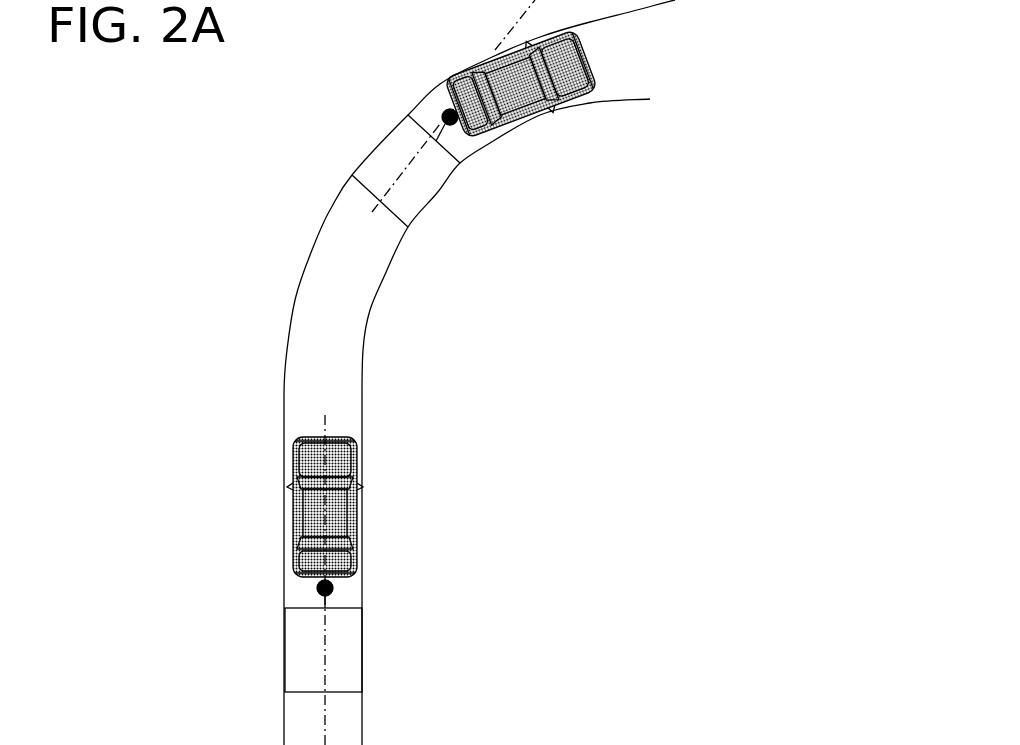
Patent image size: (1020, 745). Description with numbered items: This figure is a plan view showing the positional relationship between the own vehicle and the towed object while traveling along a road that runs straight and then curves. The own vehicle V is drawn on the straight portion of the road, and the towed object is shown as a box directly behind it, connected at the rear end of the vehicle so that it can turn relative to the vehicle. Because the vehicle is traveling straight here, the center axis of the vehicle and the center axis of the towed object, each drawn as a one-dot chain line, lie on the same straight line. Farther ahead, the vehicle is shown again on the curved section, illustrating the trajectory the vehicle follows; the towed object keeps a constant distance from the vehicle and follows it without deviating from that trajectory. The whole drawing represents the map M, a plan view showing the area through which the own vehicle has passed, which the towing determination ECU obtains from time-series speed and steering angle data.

The vehicle V is at (356, 505).
The map M is at (851, 118).